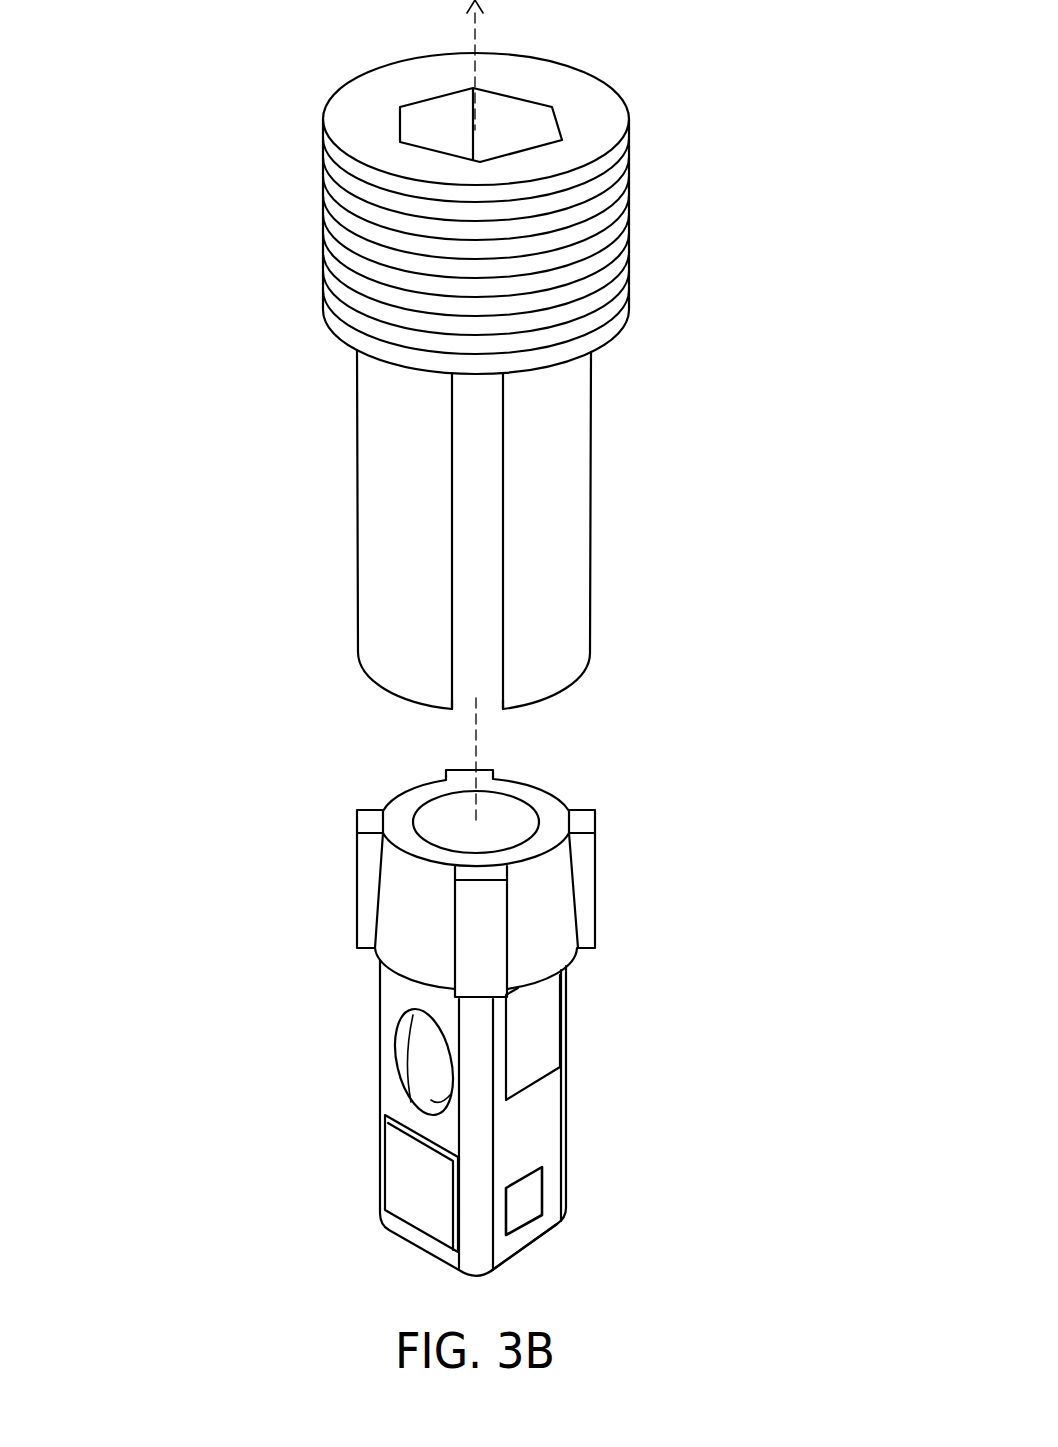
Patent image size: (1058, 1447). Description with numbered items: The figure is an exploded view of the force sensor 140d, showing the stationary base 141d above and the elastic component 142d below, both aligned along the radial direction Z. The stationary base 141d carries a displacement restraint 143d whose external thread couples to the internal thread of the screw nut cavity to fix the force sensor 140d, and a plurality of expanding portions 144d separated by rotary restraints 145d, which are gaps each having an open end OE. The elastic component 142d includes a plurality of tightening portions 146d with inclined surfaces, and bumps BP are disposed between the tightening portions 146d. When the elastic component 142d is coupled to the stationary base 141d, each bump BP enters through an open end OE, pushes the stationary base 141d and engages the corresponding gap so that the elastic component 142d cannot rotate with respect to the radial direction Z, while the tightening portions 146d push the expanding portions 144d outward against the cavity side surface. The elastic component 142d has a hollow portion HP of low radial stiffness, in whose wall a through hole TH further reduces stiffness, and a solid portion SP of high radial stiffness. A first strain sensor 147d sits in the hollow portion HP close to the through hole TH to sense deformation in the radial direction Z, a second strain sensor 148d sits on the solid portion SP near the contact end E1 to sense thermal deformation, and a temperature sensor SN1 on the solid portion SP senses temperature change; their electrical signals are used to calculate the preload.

The force sensor 140d is at (476, 643).
The stationary base 141d is at (476, 413).
The displacement restraint 143d is at (360, 262).
The expanding portions 144d is at (580, 507).
The rotary restraint 145d is at (477, 602).
The open end OE is at (488, 705).
The tightening portions 146d is at (488, 883).
The bumps BP is at (490, 925).
The elastic component 142d is at (449, 1123).
The first strain sensor 147d is at (550, 1028).
The through hole TH is at (422, 1059).
The second strain sensor 148d is at (402, 1170).
The temperature sensor SN1 is at (530, 1203).
The contact end E1 is at (530, 1242).
The hollow portion HP is at (307, 970).
The solid portion SP is at (307, 1117).
The radial direction Z is at (488, 411).